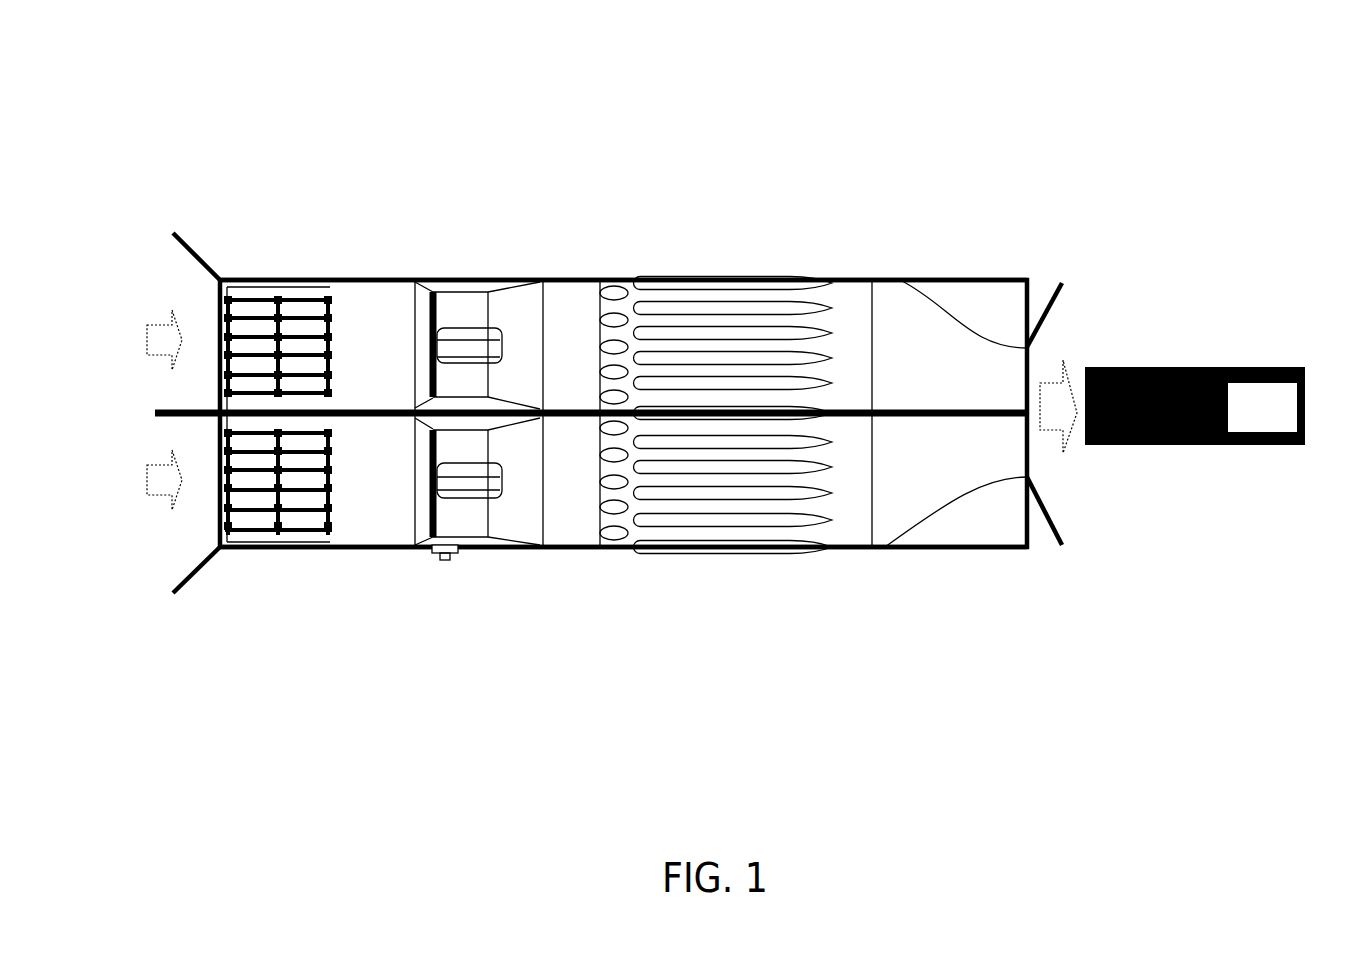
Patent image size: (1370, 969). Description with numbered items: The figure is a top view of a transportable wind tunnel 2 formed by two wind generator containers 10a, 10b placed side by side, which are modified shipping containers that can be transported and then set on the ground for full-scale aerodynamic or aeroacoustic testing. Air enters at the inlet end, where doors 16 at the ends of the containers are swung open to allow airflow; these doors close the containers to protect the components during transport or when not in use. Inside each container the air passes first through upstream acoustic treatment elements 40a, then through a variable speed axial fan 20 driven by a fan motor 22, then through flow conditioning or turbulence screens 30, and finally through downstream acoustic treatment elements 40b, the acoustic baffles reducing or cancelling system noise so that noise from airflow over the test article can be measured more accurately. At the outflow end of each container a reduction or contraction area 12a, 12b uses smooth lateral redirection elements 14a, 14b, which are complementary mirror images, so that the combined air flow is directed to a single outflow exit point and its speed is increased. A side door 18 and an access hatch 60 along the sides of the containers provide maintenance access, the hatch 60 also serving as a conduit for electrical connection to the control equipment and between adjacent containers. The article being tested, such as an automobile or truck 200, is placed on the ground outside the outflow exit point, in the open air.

The wind tunnel 2 is at (866, 732).
The wind generator container 10a is at (556, 268).
The wind generator container 10b is at (580, 563).
The reduction or contraction area 12a is at (949, 345).
The reduction or contraction area 12b is at (949, 482).
The lateral redirection element 14a is at (952, 325).
The lateral redirection element 14b is at (933, 520).
The doors 16 is at (195, 253).
The side door 18 is at (357, 549).
The variable speed axial fan 20 is at (440, 463).
The fan motor 22 is at (470, 478).
The flow conditioning screen 30 is at (615, 320).
The upstream acoustic treatment element 40a is at (332, 477).
The downstream acoustic treatment element 40b is at (733, 470).
The access hatch 60 is at (443, 560).
The automobile or truck 200 is at (1222, 375).